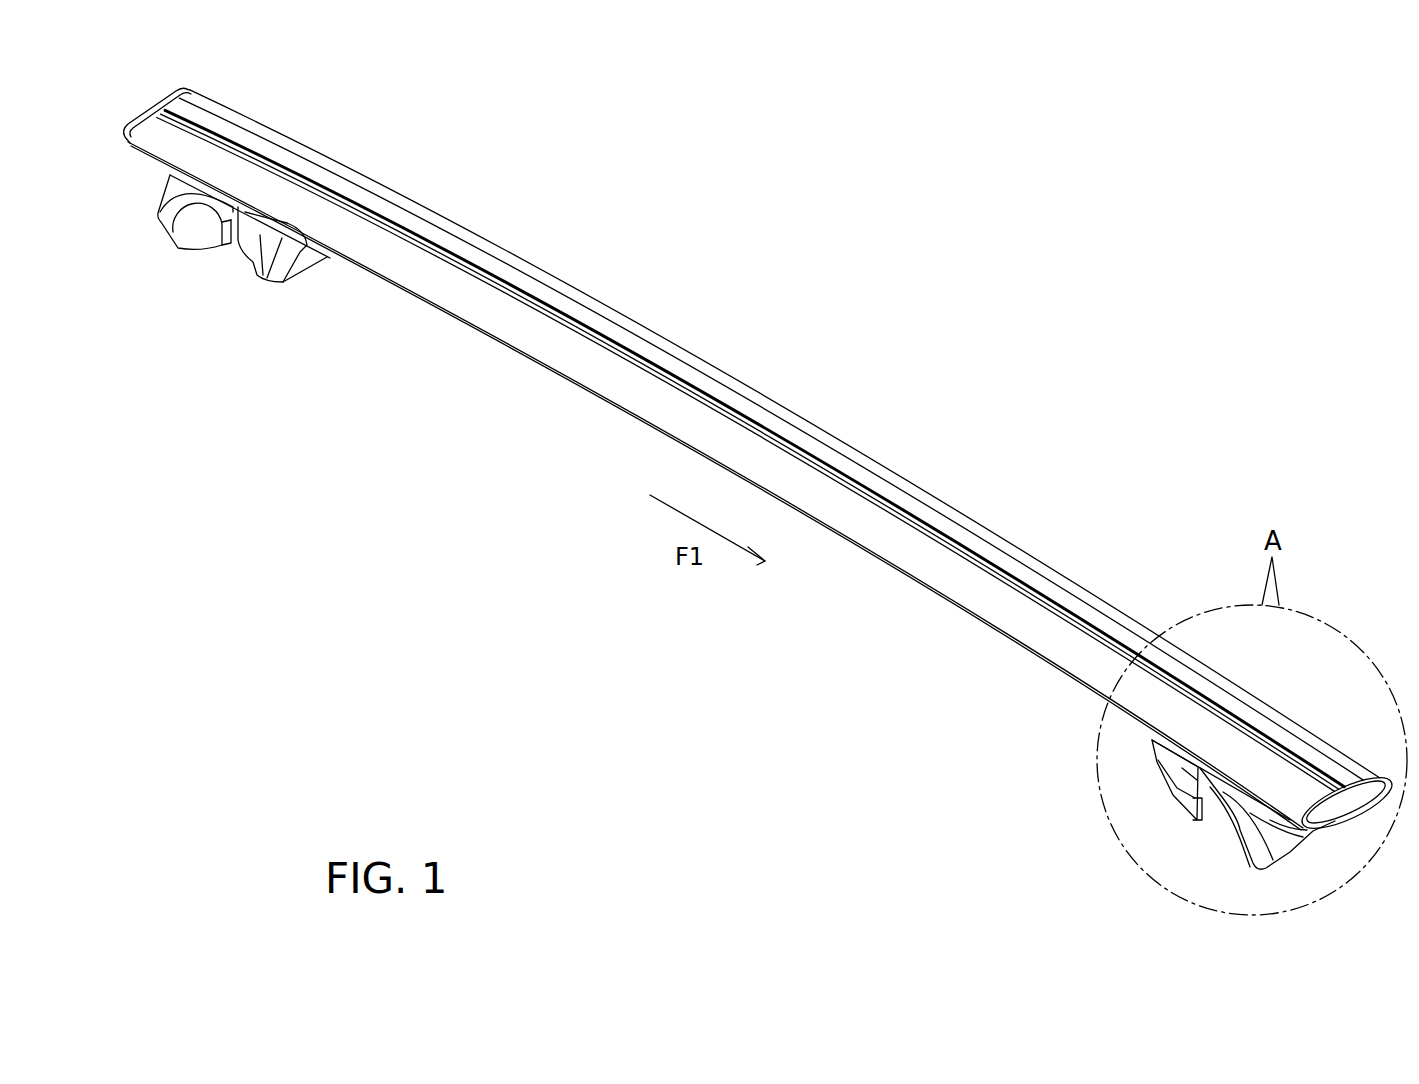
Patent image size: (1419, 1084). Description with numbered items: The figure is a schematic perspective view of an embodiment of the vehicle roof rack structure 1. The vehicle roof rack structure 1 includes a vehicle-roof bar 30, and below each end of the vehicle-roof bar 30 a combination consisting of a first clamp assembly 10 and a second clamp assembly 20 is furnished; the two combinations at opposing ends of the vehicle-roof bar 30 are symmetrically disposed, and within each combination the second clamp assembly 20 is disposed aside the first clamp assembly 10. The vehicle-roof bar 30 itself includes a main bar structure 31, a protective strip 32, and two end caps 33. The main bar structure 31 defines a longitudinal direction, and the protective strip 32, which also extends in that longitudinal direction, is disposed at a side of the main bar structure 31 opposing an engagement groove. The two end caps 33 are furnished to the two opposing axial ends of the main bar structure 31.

The vehicle roof rack structure 1 is at (831, 166).
The first clamp assembly 10 is at (162, 236).
The second clamp assembly 20 is at (302, 286).
The vehicle-roof bar 30 is at (742, 455).
The main bar structure 31 is at (937, 572).
The protective strip 32 is at (1007, 562).
The end cap 33 is at (153, 108).